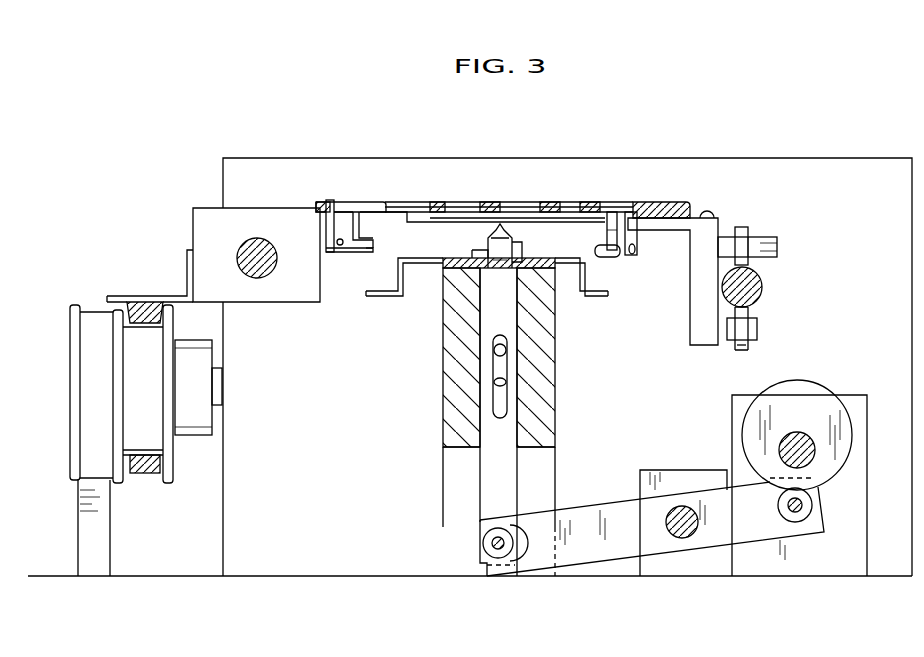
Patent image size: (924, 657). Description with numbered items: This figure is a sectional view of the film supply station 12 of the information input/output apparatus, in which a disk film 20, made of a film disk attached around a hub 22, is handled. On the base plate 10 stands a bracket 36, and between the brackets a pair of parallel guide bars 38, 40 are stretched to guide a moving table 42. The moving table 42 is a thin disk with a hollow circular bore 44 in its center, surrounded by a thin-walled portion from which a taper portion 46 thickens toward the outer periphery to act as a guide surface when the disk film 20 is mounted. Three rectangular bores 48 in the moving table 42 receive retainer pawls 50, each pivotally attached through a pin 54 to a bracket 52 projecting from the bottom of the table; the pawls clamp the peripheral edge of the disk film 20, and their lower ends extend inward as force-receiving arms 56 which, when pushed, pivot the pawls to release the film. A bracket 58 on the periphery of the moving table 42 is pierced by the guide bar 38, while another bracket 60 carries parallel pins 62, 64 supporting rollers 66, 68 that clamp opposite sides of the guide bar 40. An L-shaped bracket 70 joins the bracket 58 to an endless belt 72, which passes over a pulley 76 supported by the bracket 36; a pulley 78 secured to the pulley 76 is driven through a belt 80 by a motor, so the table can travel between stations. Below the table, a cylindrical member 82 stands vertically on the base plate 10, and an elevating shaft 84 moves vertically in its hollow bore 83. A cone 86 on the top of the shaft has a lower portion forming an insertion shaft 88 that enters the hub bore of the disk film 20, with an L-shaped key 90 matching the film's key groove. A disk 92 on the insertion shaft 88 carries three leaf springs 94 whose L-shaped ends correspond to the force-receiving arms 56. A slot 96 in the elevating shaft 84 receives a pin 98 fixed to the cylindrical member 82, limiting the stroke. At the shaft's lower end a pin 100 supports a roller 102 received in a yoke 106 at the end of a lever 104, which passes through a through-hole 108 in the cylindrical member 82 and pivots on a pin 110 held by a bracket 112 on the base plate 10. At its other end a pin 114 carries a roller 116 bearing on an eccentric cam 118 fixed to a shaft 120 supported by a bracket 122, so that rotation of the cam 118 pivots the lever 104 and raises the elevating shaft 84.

The base plate 10 is at (312, 568).
The film supply station 12 is at (415, 449).
The disk film 20 is at (573, 200).
The hub 22 is at (552, 204).
The bracket 36 is at (826, 178).
The guide bar 38 is at (257, 278).
The guide bar 40 is at (762, 291).
The moving table 42 is at (660, 204).
The hollow circular bore 44 is at (582, 222).
The taper portion 46 is at (622, 202).
The rectangular bores 48 is at (333, 200).
The retainer pawls 50 is at (355, 210).
The bracket 52 is at (375, 240).
The pin 54 is at (340, 246).
The force-receiving arm 56 is at (373, 252).
The bracket 58 is at (283, 207).
The bracket 60 is at (693, 320).
The pin 62 is at (770, 240).
The pin 64 is at (760, 330).
The roller 66 is at (742, 227).
The roller 68 is at (740, 350).
The L-shaped bracket 70 is at (163, 296).
The endless belt 72 is at (135, 300).
The pulley 76 is at (175, 475).
The pulley 78 is at (70, 400).
The belt 80 is at (80, 515).
The cylindrical member 82 is at (450, 365).
The hollow bore 83 is at (475, 325).
The elevating shaft 84 is at (540, 315).
The cone 86 is at (487, 235).
The insertion shaft 88 is at (495, 250).
The key 90 is at (513, 214).
The disk 92 is at (445, 262).
The leaf springs 94 is at (380, 298).
The slot 96 is at (506, 382).
The pin 98 is at (506, 350).
The pin 100 is at (478, 560).
The roller 102 is at (483, 543).
The lever 104 is at (608, 547).
The yoke 106 is at (508, 578).
The through-hole 108 is at (540, 488).
The pin 110 is at (688, 506).
The bracket 112 is at (652, 470).
The pin 114 is at (797, 513).
The roller 116 is at (813, 500).
The cam 118 is at (840, 430).
The shaft 120 is at (797, 432).
The bracket 122 is at (852, 400).